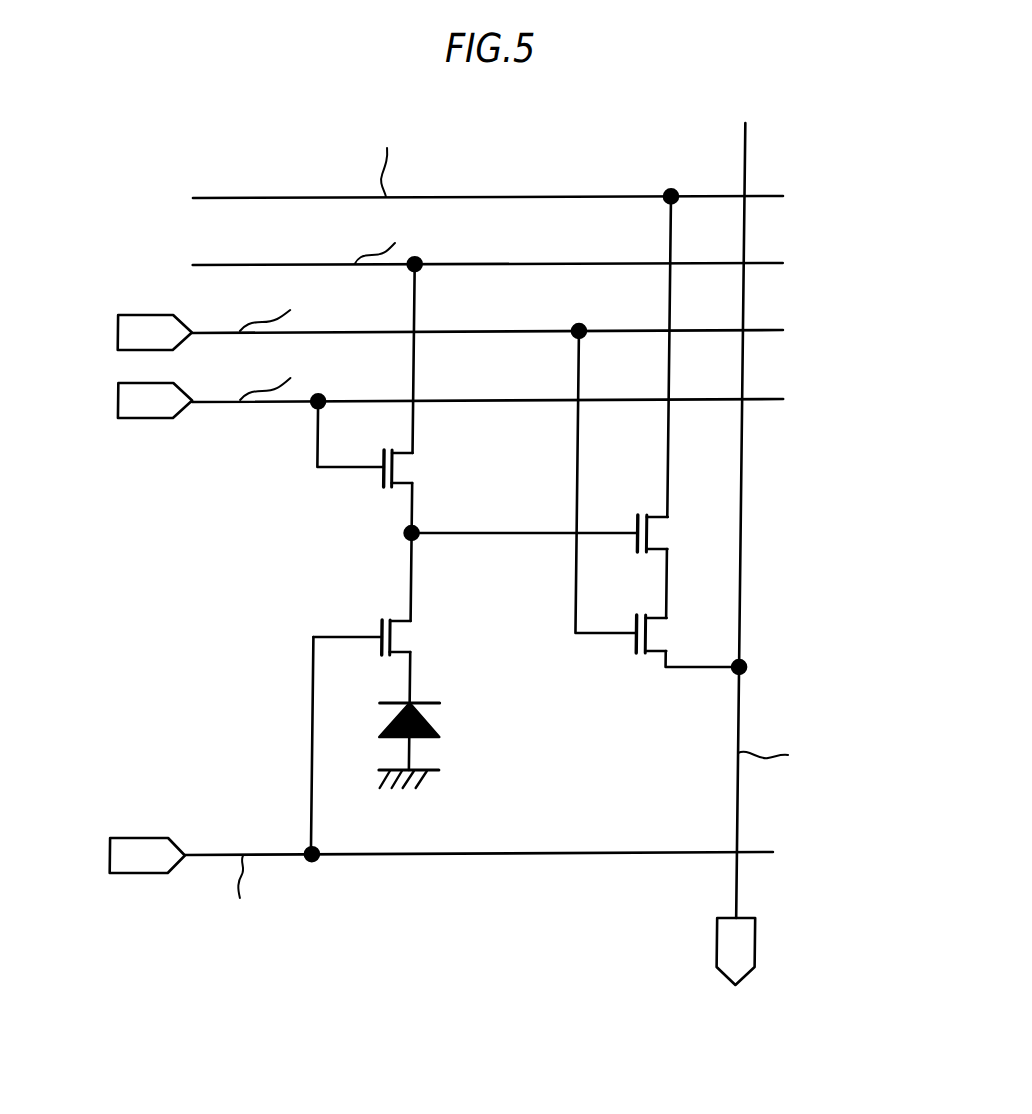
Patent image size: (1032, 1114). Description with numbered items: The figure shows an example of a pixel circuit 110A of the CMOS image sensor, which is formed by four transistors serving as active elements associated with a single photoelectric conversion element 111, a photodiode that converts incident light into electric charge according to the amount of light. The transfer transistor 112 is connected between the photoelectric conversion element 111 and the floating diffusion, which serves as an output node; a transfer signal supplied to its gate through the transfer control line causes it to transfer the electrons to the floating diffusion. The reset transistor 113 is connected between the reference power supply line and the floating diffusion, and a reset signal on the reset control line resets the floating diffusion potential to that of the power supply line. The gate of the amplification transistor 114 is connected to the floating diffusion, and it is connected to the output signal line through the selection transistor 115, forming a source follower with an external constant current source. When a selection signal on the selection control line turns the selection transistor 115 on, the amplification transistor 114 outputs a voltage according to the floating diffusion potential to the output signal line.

The pixel circuit 110A is at (908, 313).
The photoelectric conversion element 111 is at (438, 725).
The transfer transistor 112 is at (412, 635).
The reset transistor 113 is at (414, 465).
The amplification transistor 114 is at (685, 533).
The selection transistor 115 is at (684, 633).